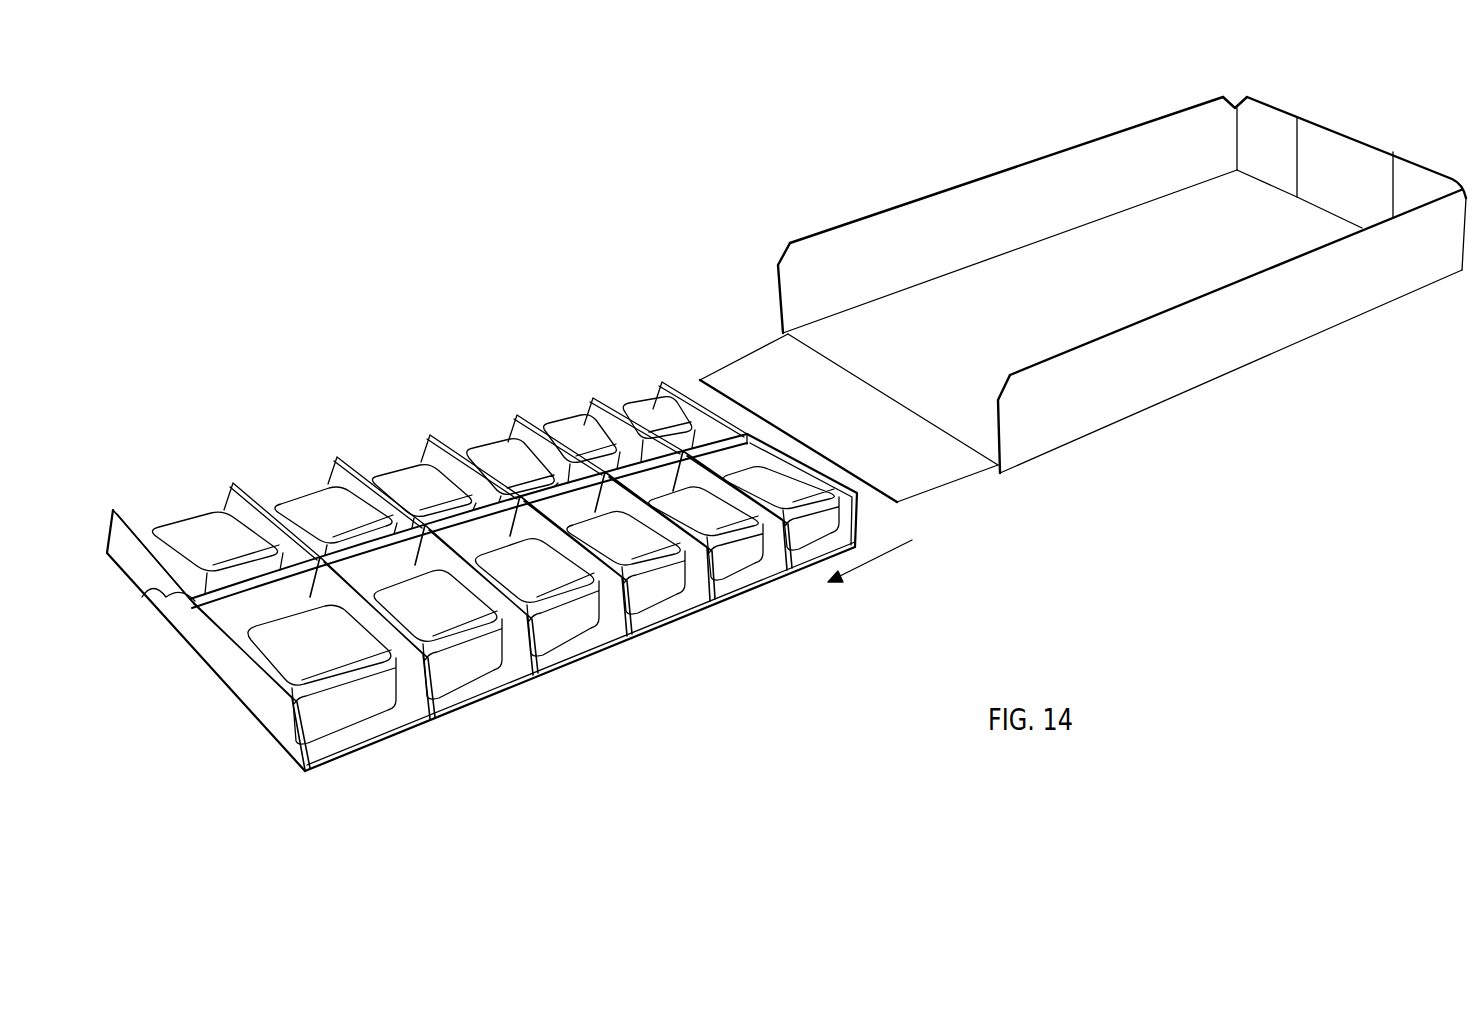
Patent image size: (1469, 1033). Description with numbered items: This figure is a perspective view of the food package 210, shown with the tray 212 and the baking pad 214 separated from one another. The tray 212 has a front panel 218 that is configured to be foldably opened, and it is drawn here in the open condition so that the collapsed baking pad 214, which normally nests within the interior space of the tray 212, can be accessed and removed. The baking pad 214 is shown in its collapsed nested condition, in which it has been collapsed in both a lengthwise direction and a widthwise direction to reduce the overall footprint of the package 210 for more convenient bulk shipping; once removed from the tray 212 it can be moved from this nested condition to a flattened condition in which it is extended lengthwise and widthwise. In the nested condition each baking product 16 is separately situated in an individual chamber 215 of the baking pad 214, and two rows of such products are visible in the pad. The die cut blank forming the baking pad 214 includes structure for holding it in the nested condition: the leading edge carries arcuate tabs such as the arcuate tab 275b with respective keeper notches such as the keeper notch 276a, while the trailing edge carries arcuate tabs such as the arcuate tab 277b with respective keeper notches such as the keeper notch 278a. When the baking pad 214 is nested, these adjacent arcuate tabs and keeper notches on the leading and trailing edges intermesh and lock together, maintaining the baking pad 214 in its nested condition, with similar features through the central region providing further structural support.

The food package 210 is at (606, 272).
The tray 212 is at (981, 172).
The baking pad 214 is at (503, 683).
The individual chamber 215 is at (597, 633).
The front panel 218 is at (915, 467).
The baking product 16 is at (500, 450).
The arcuate tab 275b is at (143, 592).
The keeper notch 276a is at (188, 596).
The arcuate tab 277b is at (707, 420).
The keeper notch 278a is at (740, 420).